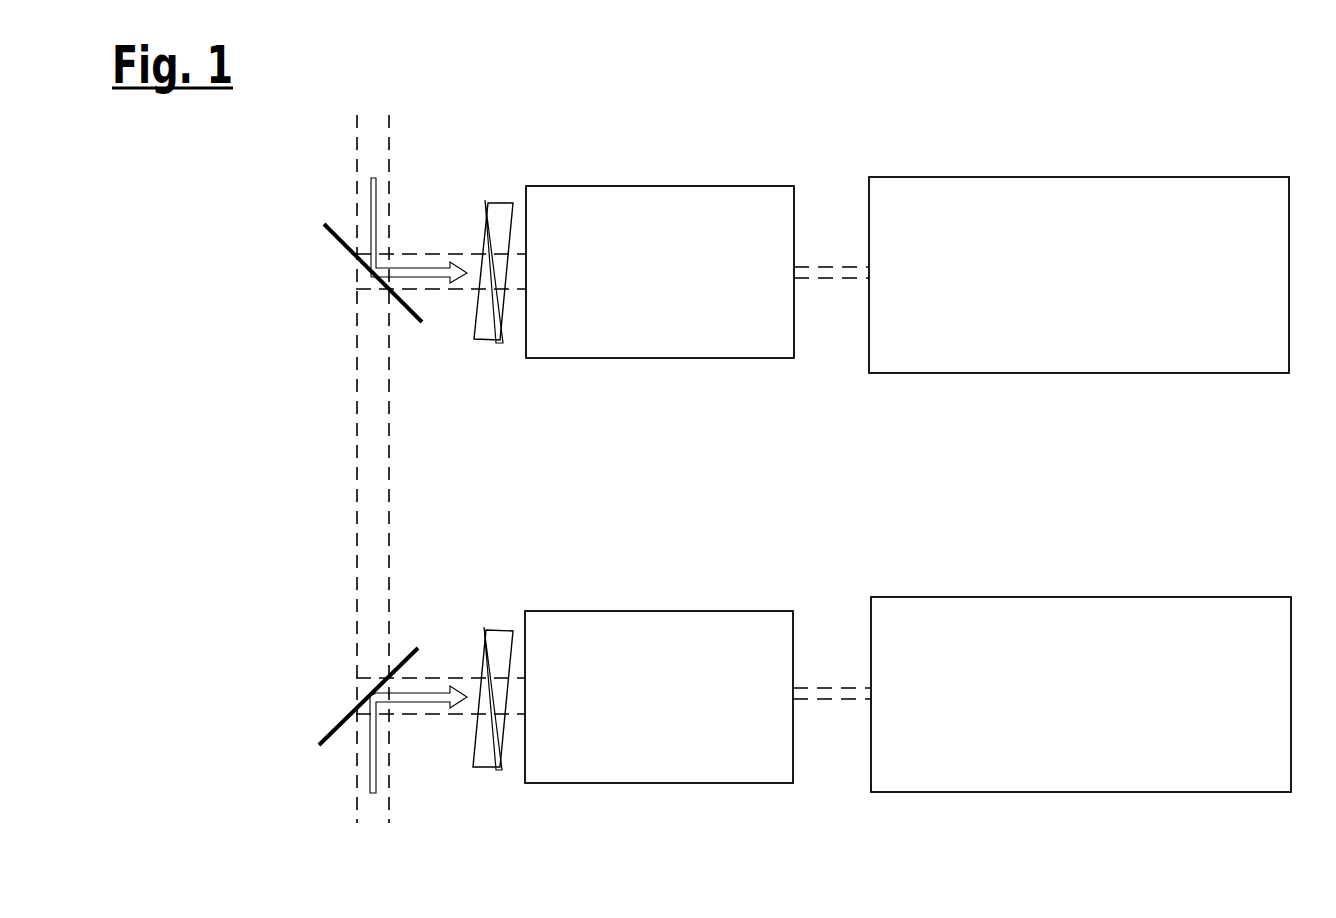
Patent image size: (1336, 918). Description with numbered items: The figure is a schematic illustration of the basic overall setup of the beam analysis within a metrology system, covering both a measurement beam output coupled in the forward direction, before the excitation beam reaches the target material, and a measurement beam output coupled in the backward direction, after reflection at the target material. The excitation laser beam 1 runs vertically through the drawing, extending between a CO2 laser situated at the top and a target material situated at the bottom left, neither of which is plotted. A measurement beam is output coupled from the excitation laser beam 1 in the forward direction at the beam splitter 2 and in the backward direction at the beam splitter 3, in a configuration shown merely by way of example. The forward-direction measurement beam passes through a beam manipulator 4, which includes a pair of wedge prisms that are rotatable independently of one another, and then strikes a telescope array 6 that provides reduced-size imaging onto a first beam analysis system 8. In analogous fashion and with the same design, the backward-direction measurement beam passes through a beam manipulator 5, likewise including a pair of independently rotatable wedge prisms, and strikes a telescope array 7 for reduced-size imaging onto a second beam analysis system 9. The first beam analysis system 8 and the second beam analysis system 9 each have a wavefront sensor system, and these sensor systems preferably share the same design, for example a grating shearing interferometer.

The excitation laser beam 1 is at (373, 433).
The beam splitter 2 is at (330, 235).
The beam splitter 3 is at (333, 725).
The beam manipulator 4 is at (486, 334).
The beam manipulator 5 is at (490, 637).
The telescope array 6 is at (680, 313).
The telescope array 7 is at (679, 736).
The first beam analysis system 8 is at (1174, 323).
The second beam analysis system 9 is at (1192, 745).